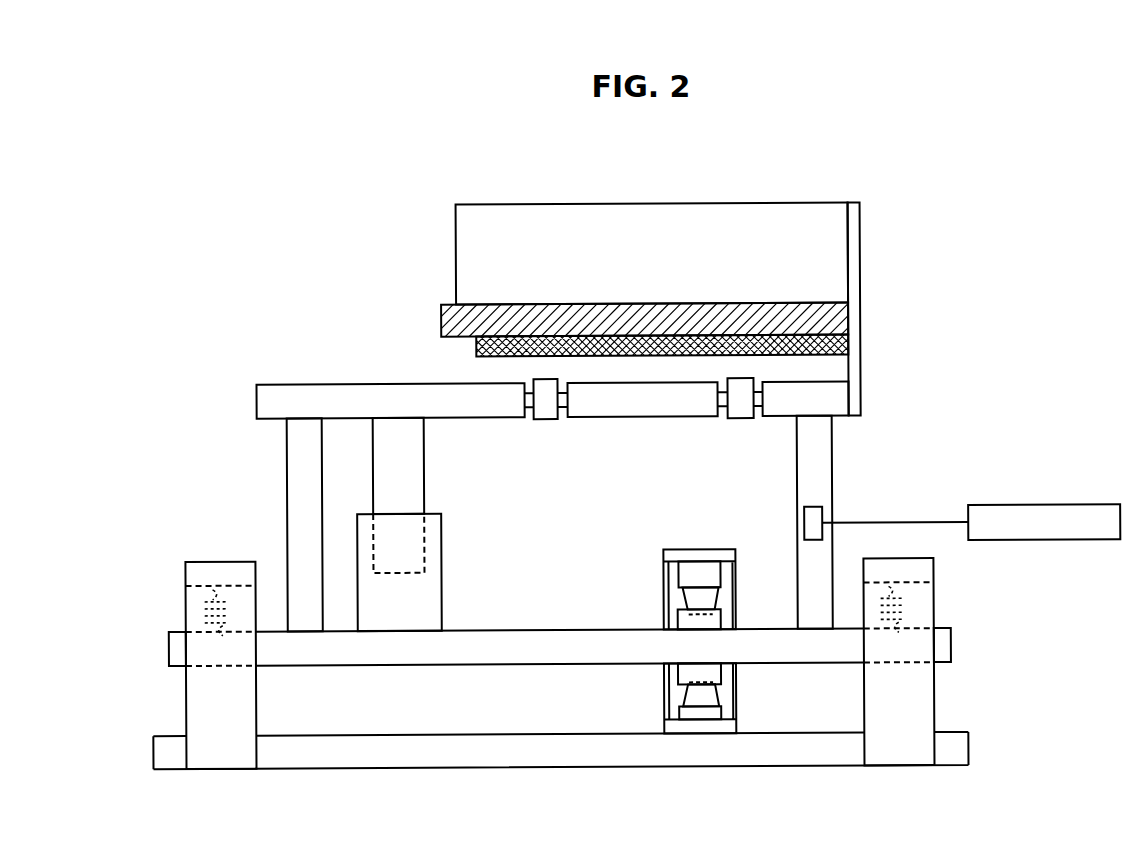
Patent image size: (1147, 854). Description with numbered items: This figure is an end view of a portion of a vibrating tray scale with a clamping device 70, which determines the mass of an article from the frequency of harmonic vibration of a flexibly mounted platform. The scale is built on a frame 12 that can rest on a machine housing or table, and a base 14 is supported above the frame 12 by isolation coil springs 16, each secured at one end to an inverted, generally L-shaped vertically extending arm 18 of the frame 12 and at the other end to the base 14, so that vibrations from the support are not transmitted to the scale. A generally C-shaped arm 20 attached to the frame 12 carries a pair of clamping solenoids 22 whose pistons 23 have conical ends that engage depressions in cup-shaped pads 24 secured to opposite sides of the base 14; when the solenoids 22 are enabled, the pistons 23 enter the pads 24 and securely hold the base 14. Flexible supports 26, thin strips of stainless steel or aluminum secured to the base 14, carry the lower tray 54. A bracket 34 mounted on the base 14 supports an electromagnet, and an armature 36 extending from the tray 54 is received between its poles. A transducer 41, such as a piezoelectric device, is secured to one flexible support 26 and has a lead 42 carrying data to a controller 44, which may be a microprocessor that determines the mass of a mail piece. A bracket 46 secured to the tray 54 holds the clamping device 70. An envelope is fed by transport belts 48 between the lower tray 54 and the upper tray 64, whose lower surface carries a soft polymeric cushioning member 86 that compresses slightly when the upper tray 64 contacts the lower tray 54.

The frame 12 is at (443, 734).
The base 14 is at (558, 628).
The isolation coil springs 16 is at (203, 606).
The vertically extending arm 18 is at (183, 713).
The C-shaped arm 20 is at (668, 578).
The clamping solenoids 22 is at (722, 578).
The pistons 23 is at (668, 607).
The cup shaped pads 24 is at (668, 622).
The flexible supports 26 is at (286, 503).
The bracket 34 is at (442, 612).
The armature 36 is at (428, 468).
The transducer 41 is at (822, 508).
The lead 42 is at (905, 524).
The controller 44 is at (1018, 507).
The bracket 46 is at (861, 256).
The transport belts 48 is at (553, 420).
The tray 54 is at (322, 383).
The upper tray 64 is at (440, 313).
The clamping device 70 is at (538, 185).
The cushioning member 86 is at (476, 352).